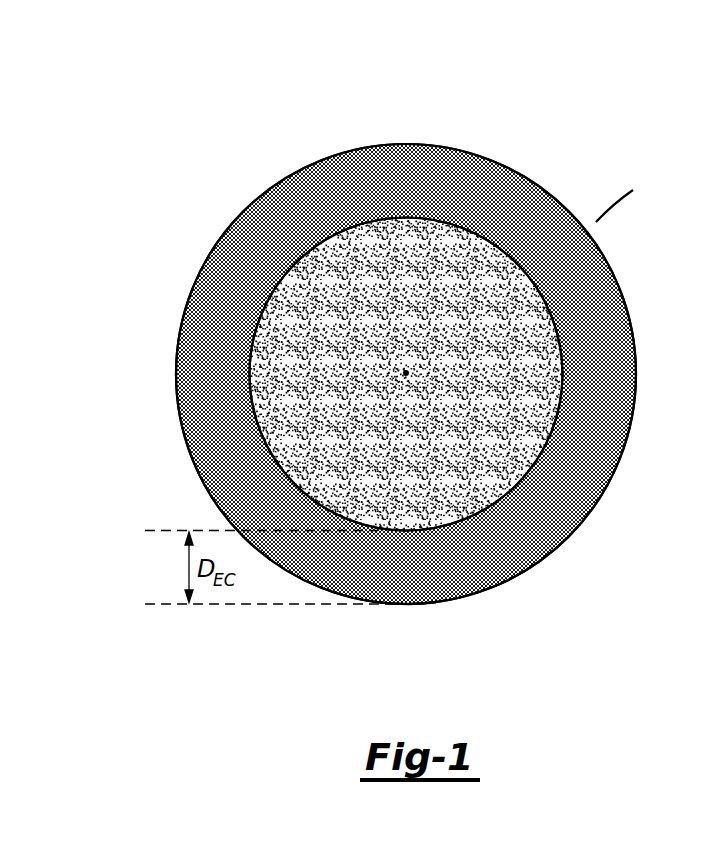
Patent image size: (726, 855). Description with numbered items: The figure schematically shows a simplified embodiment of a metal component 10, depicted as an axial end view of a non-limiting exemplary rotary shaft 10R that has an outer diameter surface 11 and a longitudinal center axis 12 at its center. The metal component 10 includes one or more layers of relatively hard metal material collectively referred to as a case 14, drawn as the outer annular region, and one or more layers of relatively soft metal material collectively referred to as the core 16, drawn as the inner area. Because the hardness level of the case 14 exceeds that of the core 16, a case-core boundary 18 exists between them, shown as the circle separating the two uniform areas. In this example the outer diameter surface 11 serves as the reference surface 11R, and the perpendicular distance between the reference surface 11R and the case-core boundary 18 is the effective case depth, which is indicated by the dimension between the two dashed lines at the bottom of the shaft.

The metal component 10 is at (413, 377).
The rotary shaft 10R is at (672, 188).
The outer diameter surface 11 is at (266, 190).
The reference surface 11R is at (405, 672).
The longitudinal center axis 12 is at (406, 374).
The case 14 is at (675, 278).
The core 16 is at (618, 528).
The case-core boundary 18 is at (670, 376).